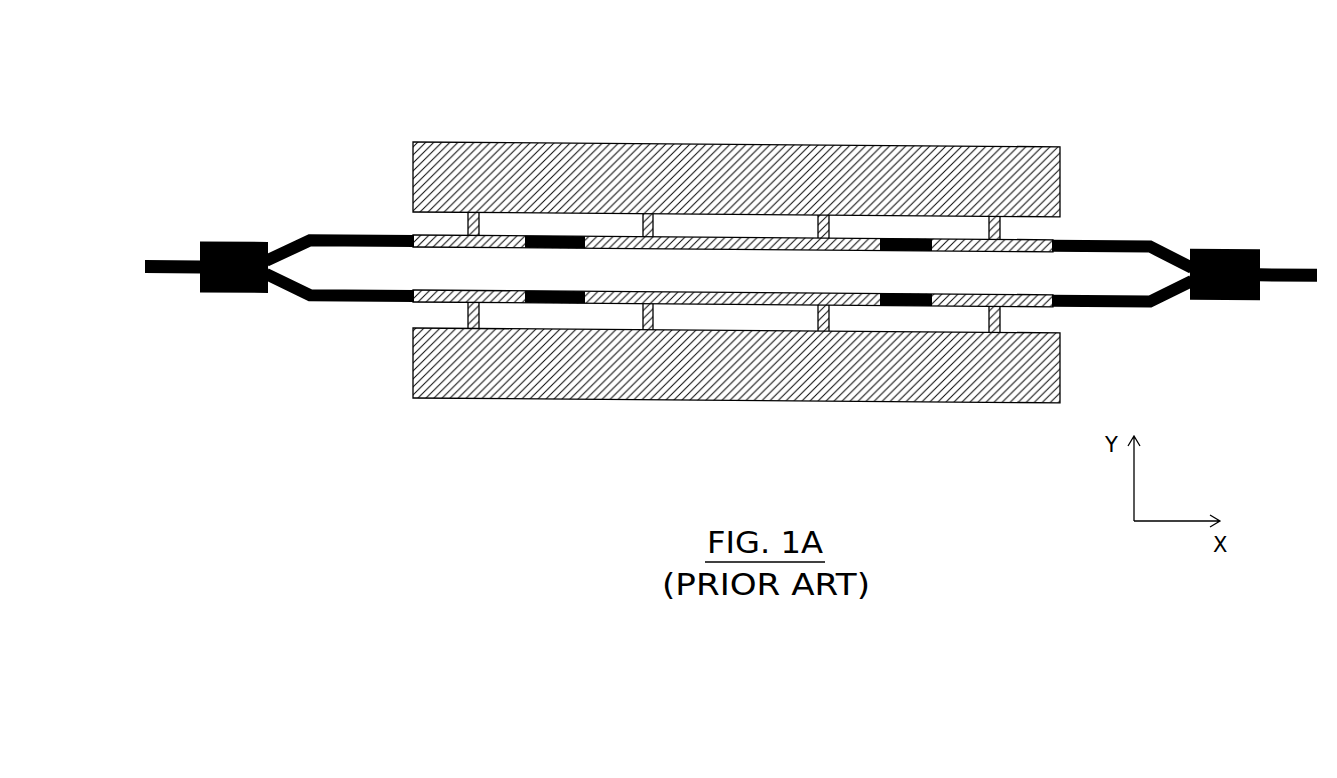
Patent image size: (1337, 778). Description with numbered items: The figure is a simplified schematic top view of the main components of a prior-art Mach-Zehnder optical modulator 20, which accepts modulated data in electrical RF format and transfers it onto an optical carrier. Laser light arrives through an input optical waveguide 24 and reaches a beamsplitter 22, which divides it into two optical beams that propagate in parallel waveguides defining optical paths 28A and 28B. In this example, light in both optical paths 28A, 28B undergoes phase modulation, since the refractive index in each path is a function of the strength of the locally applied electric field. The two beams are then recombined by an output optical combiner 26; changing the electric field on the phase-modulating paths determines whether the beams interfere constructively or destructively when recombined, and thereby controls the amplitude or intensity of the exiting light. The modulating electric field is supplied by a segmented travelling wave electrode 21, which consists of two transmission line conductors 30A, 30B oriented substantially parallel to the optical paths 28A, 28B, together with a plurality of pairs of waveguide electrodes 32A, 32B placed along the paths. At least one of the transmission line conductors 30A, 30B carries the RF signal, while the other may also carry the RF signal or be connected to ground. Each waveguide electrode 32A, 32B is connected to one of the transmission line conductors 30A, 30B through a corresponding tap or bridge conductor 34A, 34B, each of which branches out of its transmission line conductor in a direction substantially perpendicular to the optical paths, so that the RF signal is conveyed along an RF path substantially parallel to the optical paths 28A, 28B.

The Mach-Zehnder optical modulator 20 is at (718, 118).
The segmented travelling wave electrode 21 is at (378, 158).
The beamsplitter 22 is at (250, 243).
The input optical waveguide 24 is at (170, 276).
The output optical combiner 26 is at (1222, 301).
The optical path 28A is at (1125, 241).
The optical path 28B is at (1110, 306).
The transmission line conductor 30A is at (528, 158).
The transmission line conductor 30B is at (555, 400).
The waveguide electrode 32A is at (878, 255).
The waveguide electrode 32B is at (945, 294).
The bridge conductor 34A is at (985, 224).
The bridge conductor 34B is at (985, 322).